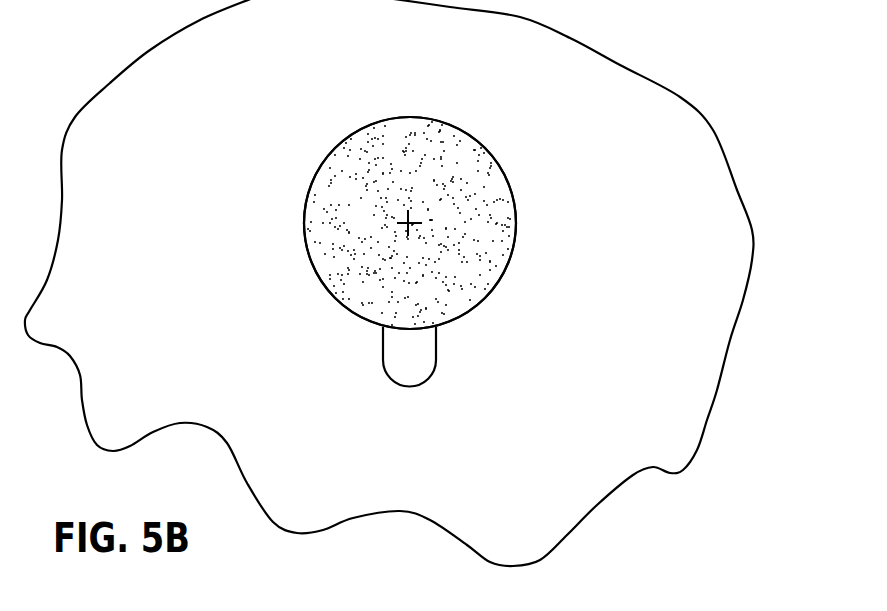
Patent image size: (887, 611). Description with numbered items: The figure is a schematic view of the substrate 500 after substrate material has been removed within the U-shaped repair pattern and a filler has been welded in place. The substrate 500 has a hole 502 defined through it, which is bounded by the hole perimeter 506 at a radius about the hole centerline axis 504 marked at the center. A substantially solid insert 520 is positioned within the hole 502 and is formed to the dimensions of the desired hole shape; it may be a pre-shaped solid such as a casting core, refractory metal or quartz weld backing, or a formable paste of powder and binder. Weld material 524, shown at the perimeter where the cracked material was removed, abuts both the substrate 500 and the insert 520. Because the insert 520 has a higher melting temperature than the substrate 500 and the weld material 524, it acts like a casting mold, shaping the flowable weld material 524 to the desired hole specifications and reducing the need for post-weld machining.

The substrate 500 is at (675, 115).
The hole 502 is at (524, 225).
The hole centerline axis 504 is at (418, 217).
The hole perimeter 506 is at (312, 190).
The substantially solid insert 520 is at (340, 247).
The weld material 524 is at (417, 352).